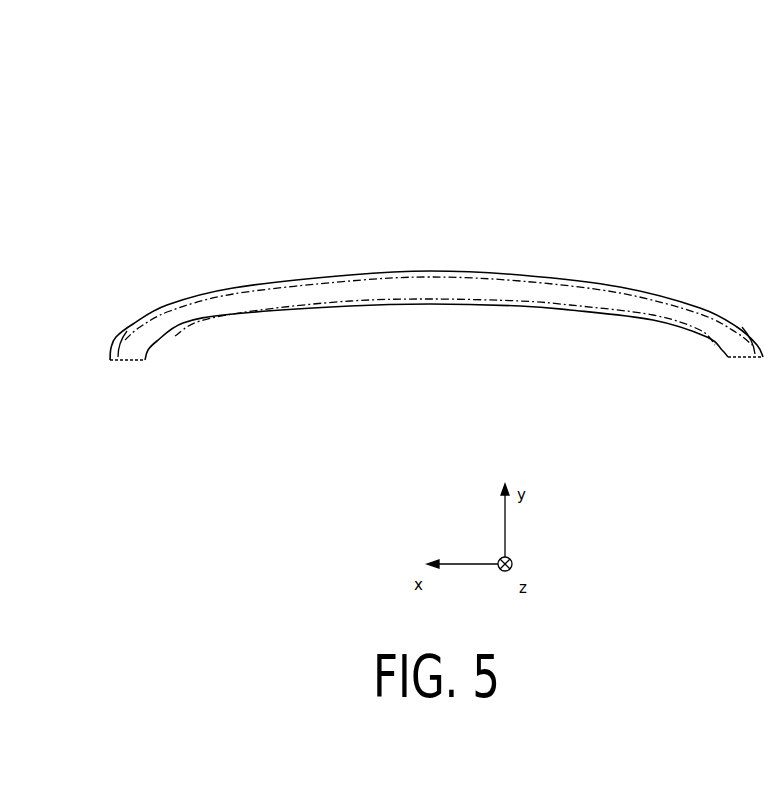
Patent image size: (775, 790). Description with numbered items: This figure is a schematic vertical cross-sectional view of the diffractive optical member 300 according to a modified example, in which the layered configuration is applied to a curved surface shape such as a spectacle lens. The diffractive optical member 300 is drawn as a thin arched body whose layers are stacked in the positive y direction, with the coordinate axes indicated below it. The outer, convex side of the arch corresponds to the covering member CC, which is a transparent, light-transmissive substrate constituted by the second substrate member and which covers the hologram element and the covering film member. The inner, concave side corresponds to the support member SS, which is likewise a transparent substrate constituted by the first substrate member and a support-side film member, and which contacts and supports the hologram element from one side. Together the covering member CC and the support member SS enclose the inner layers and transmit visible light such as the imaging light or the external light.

The diffractive optical member 300 is at (408, 122).
The covering member CC is at (487, 275).
The support member SS is at (488, 305).